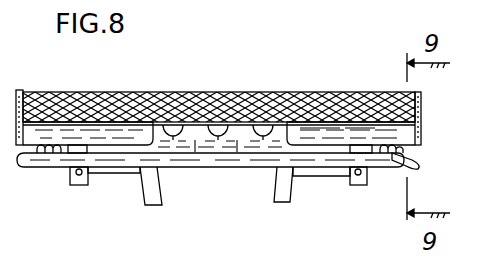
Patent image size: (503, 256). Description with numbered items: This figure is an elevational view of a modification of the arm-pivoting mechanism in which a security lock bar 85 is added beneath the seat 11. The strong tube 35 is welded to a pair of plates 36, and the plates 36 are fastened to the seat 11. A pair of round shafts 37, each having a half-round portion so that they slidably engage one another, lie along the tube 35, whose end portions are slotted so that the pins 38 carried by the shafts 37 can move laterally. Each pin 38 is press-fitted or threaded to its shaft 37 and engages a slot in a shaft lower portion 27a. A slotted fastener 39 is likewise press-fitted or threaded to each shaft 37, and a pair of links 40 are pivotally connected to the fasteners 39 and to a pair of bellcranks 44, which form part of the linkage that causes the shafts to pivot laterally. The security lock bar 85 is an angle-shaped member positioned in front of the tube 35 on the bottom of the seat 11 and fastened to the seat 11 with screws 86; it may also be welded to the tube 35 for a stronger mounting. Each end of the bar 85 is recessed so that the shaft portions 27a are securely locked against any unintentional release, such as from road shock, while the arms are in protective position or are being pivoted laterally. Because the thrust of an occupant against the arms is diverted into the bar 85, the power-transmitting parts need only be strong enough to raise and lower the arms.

The seat 11 is at (120, 103).
The plates 36 is at (18, 91).
The pin 38 is at (65, 93).
The tube 35 is at (302, 130).
The screws 86 is at (261, 120).
The round shafts 37 is at (322, 126).
The security lock bar 85 is at (236, 168).
The slotted fastener 39 is at (72, 186).
The links 40 is at (118, 174).
The bellcranks 44 is at (150, 200).
The shaft lower portion 27a is at (402, 160).